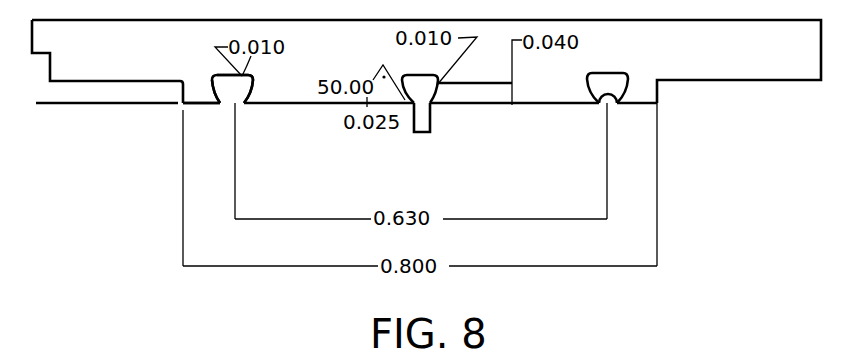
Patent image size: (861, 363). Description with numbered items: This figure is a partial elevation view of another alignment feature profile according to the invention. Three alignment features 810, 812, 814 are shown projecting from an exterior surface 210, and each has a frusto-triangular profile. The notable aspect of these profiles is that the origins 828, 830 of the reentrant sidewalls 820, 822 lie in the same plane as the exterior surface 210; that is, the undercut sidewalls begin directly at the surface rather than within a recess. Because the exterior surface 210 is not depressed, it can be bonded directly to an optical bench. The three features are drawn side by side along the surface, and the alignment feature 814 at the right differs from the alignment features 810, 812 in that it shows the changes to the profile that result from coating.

The exterior surface 210 is at (530, 105).
The alignment feature 810 is at (237, 104).
The alignment feature 812 is at (419, 104).
The alignment feature 814 is at (608, 105).
The reentrant sidewall 820 is at (216, 103).
The reentrant sidewall 822 is at (254, 84).
The origin of reentrant sidewall 828 is at (223, 104).
The origin of reentrant sidewall 830 is at (244, 105).